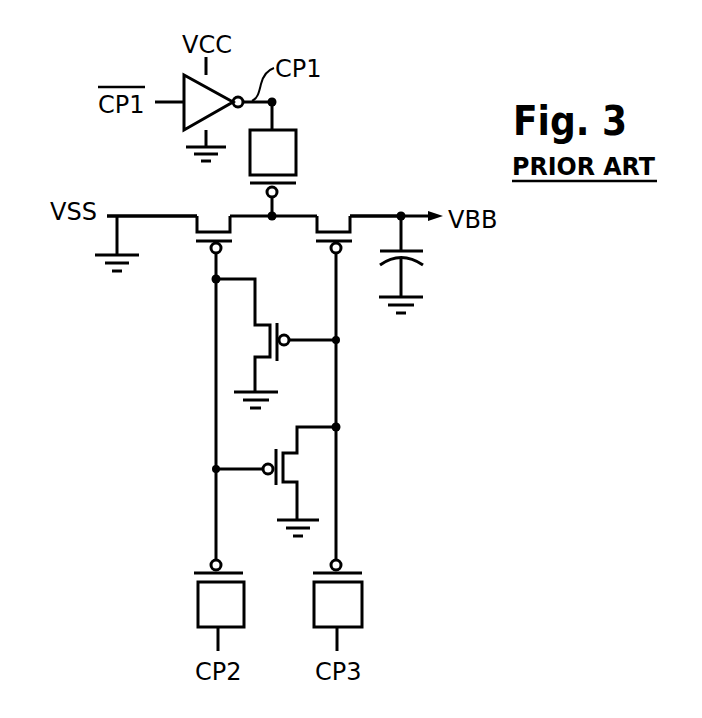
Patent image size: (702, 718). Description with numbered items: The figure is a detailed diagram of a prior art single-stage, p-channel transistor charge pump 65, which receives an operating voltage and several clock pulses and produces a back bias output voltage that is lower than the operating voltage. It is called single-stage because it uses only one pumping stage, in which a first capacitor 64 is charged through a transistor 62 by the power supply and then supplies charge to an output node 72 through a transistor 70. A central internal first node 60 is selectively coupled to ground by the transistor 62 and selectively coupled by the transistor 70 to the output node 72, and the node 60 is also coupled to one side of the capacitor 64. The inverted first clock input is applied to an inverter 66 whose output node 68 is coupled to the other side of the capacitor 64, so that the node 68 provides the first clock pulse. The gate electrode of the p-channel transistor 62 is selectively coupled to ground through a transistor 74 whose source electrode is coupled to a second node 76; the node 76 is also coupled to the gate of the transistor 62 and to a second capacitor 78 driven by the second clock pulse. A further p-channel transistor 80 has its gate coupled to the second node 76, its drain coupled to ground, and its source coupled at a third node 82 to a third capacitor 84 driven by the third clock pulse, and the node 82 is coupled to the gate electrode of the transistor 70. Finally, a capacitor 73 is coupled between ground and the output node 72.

The first node 60 is at (269, 222).
The transistor 62 is at (213, 230).
The first capacitor 64 is at (297, 153).
The charge pump 65 is at (457, 407).
The inverter 66 is at (186, 118).
The output node 68 is at (276, 101).
The transistor 70 is at (332, 222).
The output node 72 is at (403, 214).
The capacitor 73 is at (418, 266).
The transistor 74 is at (256, 325).
The second node 76 is at (215, 280).
The second capacitor 78 is at (199, 600).
The p-channel transistor 80 is at (284, 484).
The third node 82 is at (338, 425).
The third capacitor 84 is at (362, 607).